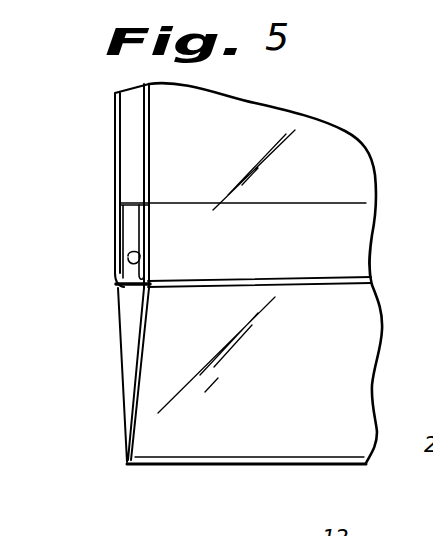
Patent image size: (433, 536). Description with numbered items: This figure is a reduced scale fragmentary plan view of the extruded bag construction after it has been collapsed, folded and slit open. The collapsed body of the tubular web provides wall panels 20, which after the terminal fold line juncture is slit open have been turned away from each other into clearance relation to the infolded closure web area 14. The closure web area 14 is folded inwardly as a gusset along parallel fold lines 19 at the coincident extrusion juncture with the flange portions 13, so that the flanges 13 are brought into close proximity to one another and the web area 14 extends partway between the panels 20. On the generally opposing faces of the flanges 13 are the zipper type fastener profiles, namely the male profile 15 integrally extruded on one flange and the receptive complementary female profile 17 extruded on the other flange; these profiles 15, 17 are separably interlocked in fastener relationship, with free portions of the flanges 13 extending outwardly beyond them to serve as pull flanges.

The wall panels 20 is at (147, 147).
The closure web area 14 is at (145, 431).
The flange portions 13 is at (135, 240).
The male profile 15 is at (140, 262).
The female profile 17 is at (147, 270).
The fold lines 19 is at (140, 292).